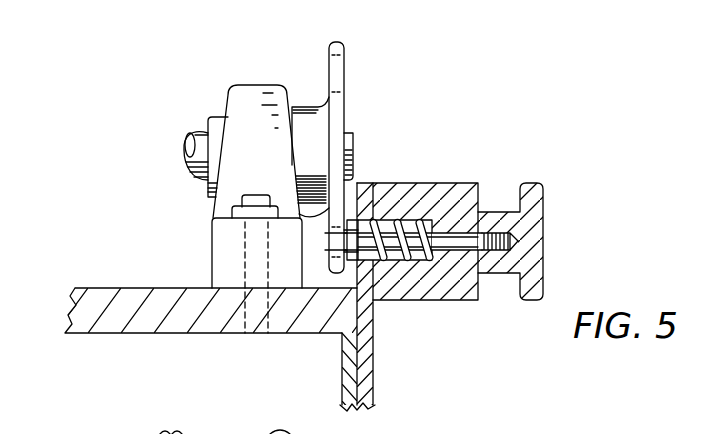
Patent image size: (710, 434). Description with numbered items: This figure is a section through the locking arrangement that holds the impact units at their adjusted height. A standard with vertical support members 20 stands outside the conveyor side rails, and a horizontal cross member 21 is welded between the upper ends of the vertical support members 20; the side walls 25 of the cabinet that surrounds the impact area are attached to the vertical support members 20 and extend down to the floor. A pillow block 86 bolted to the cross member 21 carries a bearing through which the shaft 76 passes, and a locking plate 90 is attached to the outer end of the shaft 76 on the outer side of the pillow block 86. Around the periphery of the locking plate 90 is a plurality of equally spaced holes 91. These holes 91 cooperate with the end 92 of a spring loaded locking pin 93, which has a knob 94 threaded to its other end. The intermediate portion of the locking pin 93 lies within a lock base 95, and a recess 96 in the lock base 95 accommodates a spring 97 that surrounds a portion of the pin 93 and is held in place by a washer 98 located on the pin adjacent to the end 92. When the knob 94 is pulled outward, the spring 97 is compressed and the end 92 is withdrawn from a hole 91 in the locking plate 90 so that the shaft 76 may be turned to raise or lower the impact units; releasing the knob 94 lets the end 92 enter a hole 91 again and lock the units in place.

The vertical support members 20 is at (342, 376).
The horizontal cross member 21 is at (177, 323).
The side walls 25 is at (373, 370).
The shaft 76 is at (200, 133).
The pillow block 86 is at (259, 84).
The locking plate 90 is at (337, 115).
The holes 91 is at (337, 92).
The end of locking pin 92 is at (350, 258).
The locking pin 93 is at (458, 262).
The knob 94 is at (531, 183).
The lock base 95 is at (432, 183).
The recess 96 is at (408, 258).
The spring 97 is at (378, 221).
The washer 98 is at (328, 233).